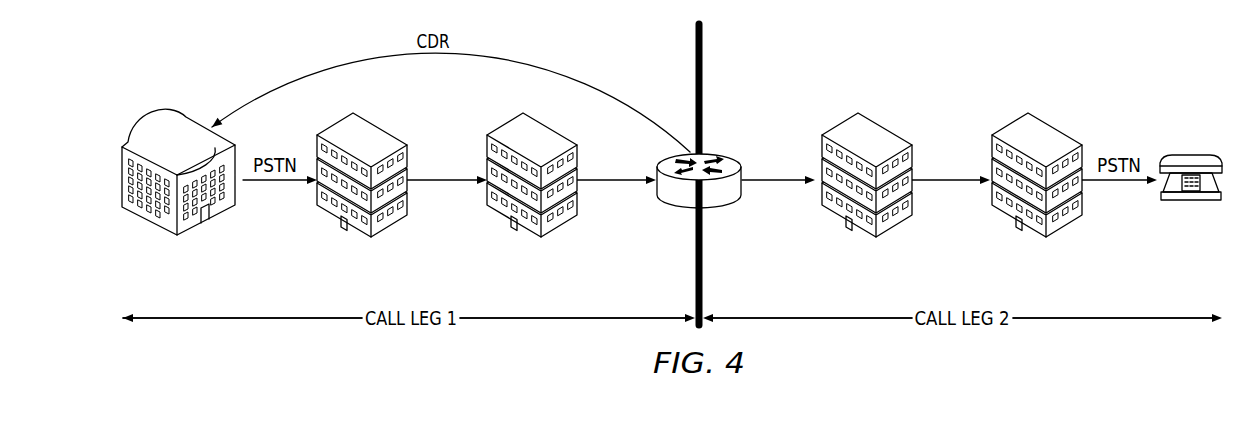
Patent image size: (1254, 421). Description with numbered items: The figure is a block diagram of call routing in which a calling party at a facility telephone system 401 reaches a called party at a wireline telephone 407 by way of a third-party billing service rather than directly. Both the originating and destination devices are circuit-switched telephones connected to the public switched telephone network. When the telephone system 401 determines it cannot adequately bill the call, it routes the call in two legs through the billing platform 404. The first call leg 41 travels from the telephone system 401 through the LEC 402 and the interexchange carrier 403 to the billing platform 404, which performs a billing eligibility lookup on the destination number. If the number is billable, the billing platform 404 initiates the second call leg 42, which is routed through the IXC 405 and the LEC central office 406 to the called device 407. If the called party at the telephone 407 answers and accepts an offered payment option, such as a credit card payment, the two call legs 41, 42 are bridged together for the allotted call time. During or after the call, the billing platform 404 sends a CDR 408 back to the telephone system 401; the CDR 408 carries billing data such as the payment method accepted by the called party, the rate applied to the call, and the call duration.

The facility telephone system 401 is at (158, 122).
The LEC 402 is at (340, 128).
The interexchange carrier (IXC) 403 is at (510, 128).
The billing platform 404 is at (717, 153).
The interexchange carrier (IXC) 405 is at (882, 134).
The LEC central office (CO) 406 is at (1052, 134).
The wireline telephone 407 is at (1190, 152).
The CDR 408 is at (357, 60).
The first call leg 41 is at (247, 320).
The second call leg 42 is at (1125, 320).